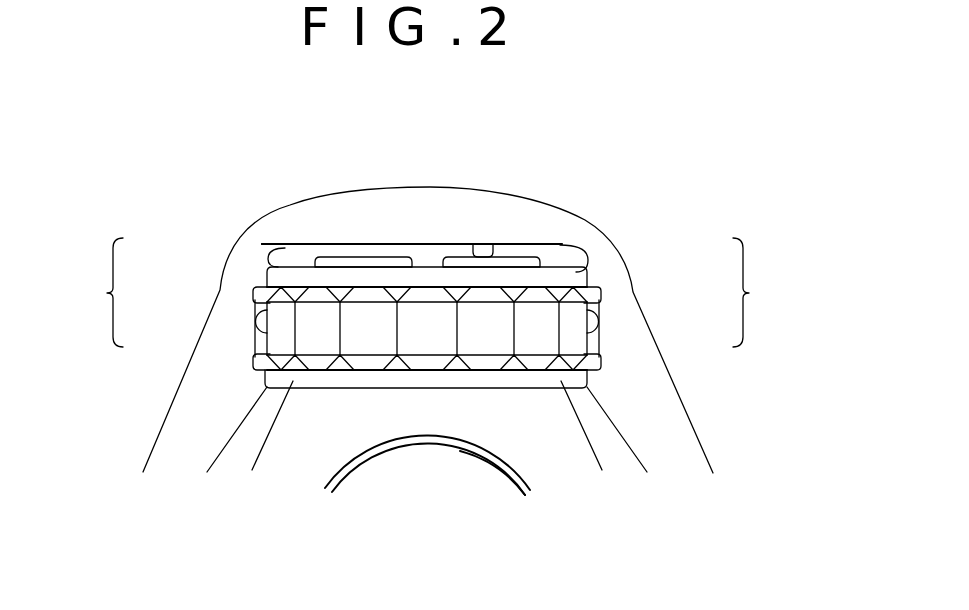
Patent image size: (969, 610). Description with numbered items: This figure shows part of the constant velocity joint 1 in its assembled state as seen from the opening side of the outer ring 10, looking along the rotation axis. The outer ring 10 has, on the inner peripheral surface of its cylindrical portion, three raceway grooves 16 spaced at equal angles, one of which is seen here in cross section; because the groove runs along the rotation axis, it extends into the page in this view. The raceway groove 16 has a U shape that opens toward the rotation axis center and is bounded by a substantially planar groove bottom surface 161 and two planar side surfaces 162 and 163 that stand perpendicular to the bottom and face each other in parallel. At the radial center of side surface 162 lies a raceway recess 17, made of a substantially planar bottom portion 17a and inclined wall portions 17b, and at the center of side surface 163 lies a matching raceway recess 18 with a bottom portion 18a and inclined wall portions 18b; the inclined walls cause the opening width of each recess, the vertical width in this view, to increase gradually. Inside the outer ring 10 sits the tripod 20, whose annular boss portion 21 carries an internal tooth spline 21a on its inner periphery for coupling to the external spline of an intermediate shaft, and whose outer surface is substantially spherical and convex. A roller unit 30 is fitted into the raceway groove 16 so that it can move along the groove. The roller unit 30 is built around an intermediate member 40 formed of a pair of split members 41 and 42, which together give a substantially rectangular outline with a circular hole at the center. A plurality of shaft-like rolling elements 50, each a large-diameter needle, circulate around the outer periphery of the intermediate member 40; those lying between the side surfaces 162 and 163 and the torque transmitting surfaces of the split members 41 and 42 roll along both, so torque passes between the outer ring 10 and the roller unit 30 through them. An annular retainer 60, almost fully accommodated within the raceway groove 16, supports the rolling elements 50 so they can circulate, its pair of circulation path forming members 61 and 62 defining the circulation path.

The constant velocity joint 1 is at (672, 161).
The outer ring 10 is at (655, 433).
The raceway groove 16 is at (490, 244).
The groove bottom surface 161 is at (440, 243).
The side surface 162 is at (263, 244).
The side surface 163 is at (582, 248).
The raceway recess 17 is at (160, 297).
The bottom portion 17a is at (266, 308).
The inclined wall portions 17b is at (268, 289).
The raceway recess 18 is at (693, 297).
The bottom portion 18a is at (588, 308).
The inclined wall portions 18b is at (587, 289).
The tripod 20 is at (410, 410).
The boss portion 21 is at (307, 448).
The internal tooth spline 21a is at (490, 462).
The roller unit 30 is at (553, 255).
The intermediate member 40 is at (400, 243).
The split member 41 is at (521, 256).
The split member 42 is at (350, 245).
The shaft-like rolling element 50 is at (360, 320).
The retainer 60 is at (300, 266).
The circulation path forming member 61 is at (288, 249).
The circulation path forming member 62 is at (265, 386).